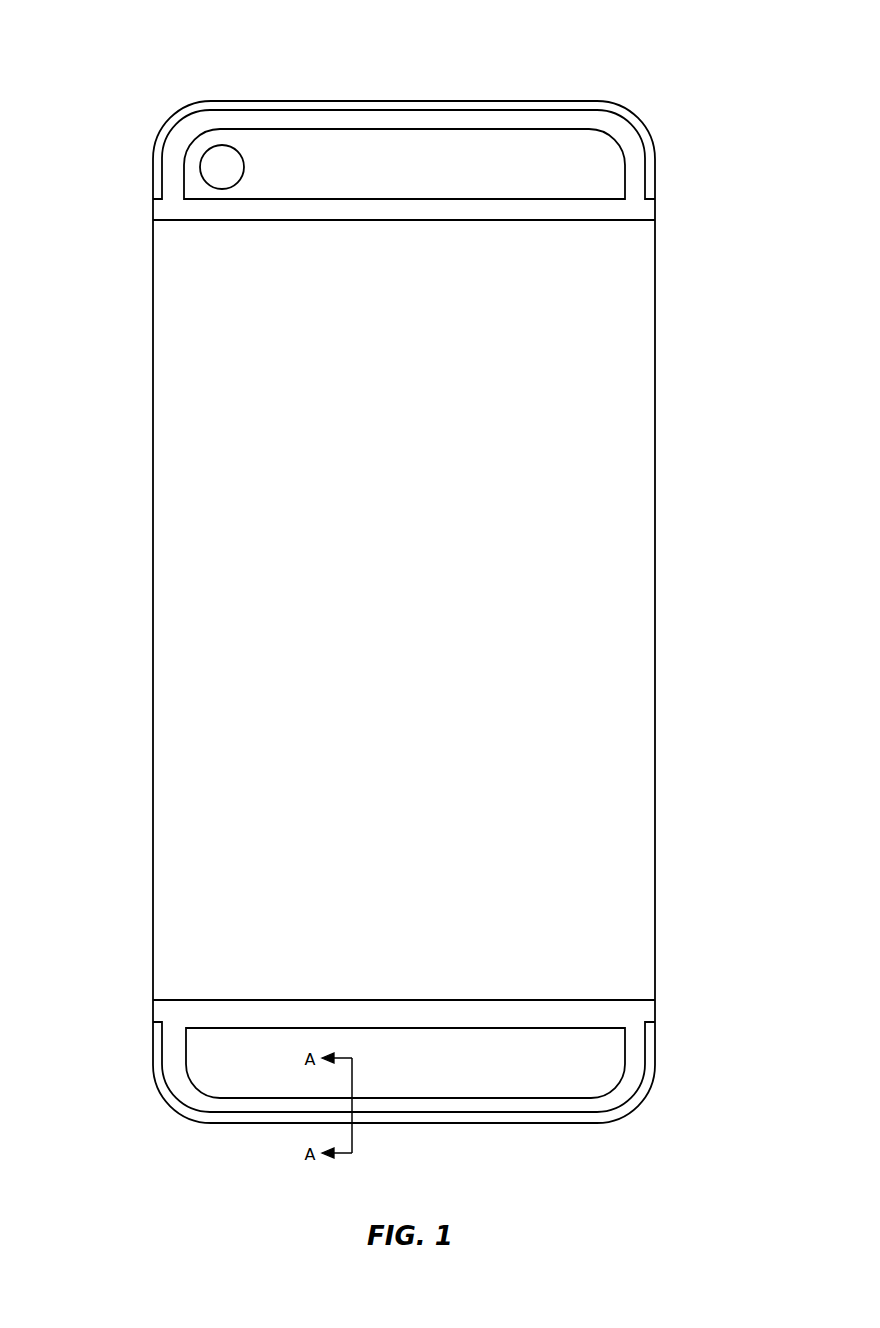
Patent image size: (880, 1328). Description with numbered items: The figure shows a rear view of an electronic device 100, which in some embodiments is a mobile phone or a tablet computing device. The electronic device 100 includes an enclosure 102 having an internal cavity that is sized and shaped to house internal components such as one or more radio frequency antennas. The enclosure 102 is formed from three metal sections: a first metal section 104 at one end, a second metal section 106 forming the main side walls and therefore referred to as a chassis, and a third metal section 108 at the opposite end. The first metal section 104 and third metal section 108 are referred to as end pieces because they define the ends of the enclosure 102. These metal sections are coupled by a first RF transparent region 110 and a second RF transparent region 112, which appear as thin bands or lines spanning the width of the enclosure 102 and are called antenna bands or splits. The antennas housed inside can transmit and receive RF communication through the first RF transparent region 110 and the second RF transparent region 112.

The electronic device 100 is at (624, 80).
The enclosure 102 is at (655, 600).
The first metal section 104 is at (515, 1123).
The second metal section 106 is at (153, 620).
The third metal section 108 is at (268, 101).
The first RF transparent region 110 is at (153, 1012).
The second RF transparent region 112 is at (153, 210).